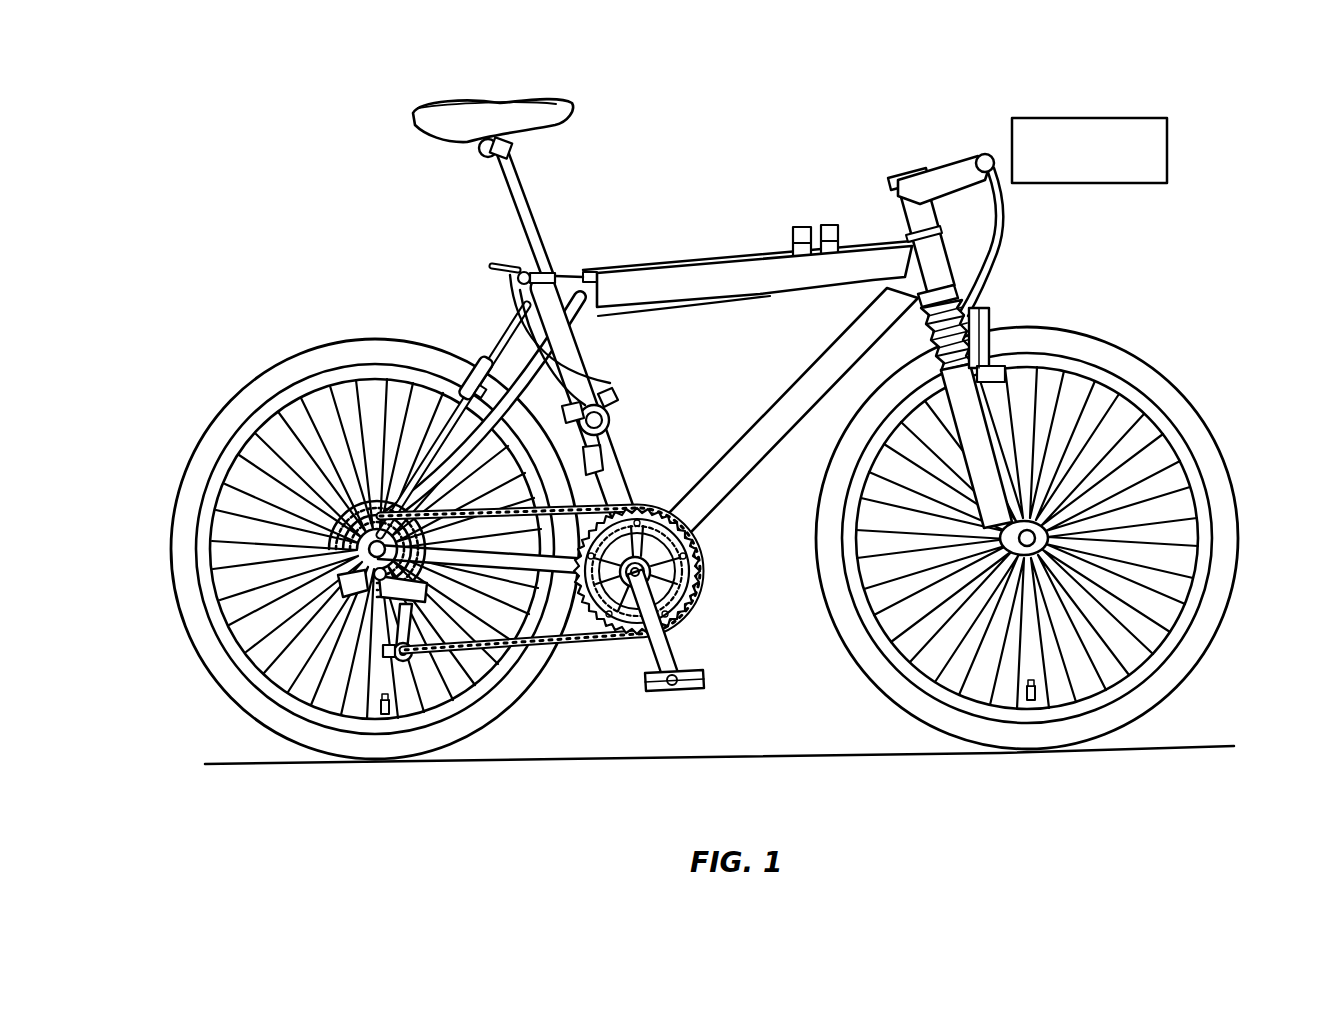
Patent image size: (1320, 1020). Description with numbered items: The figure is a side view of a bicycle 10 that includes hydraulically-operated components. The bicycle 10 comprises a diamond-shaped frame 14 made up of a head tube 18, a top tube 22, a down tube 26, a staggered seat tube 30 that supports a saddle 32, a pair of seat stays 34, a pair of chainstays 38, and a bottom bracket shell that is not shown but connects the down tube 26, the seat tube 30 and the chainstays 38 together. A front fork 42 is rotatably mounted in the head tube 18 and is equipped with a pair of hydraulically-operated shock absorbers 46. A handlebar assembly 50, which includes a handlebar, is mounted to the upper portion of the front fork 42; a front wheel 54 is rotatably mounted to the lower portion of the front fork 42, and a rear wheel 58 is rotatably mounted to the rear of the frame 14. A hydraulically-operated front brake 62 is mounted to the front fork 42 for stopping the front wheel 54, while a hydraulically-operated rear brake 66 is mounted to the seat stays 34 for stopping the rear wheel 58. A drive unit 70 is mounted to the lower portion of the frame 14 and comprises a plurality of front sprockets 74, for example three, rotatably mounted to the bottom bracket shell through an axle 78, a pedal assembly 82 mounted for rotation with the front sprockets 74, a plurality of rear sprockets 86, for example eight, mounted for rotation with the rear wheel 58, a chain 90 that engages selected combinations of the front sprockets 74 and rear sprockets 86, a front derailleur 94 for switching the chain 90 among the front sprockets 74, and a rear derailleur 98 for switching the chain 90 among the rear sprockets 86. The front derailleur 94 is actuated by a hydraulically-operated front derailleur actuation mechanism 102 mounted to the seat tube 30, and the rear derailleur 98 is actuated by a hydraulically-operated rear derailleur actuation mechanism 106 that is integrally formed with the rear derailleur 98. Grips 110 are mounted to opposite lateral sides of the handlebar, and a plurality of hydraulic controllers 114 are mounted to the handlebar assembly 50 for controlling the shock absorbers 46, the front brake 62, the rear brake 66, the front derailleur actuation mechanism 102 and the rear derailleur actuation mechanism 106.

The bicycle 10 is at (728, 240).
The frame 14 is at (662, 238).
The head tube 18 is at (927, 258).
The top tube 22 is at (640, 290).
The down tube 26 is at (783, 410).
The staggered seat tube 30 is at (545, 300).
The saddle 32 is at (555, 103).
The seat stays 34 is at (510, 338).
The chainstays 38 is at (506, 560).
The front fork 42 is at (978, 453).
The hydraulically-operated shock absorbers 46 is at (932, 342).
The handlebar assembly 50 is at (902, 142).
The front wheel 54 is at (1235, 428).
The rear wheel 58 is at (205, 378).
The hydraulically-operated front brake 62 is at (995, 300).
The hydraulically-operated rear brake 66 is at (455, 372).
The drive unit 70 is at (722, 620).
The front sprockets 74 is at (718, 592).
The axle 78 is at (660, 560).
The pedal assembly 82 is at (718, 685).
The rear sprockets 86 is at (352, 490).
The chain 90 is at (492, 650).
The front derailleur 94 is at (610, 468).
The rear derailleur 98 is at (402, 662).
The hydraulically-operated front derailleur actuation mechanism 102 is at (604, 372).
The hydraulically-operated rear derailleur actuation mechanism 106 is at (345, 565).
The grips 110 is at (983, 154).
The hydraulic controllers 114 is at (1146, 108).